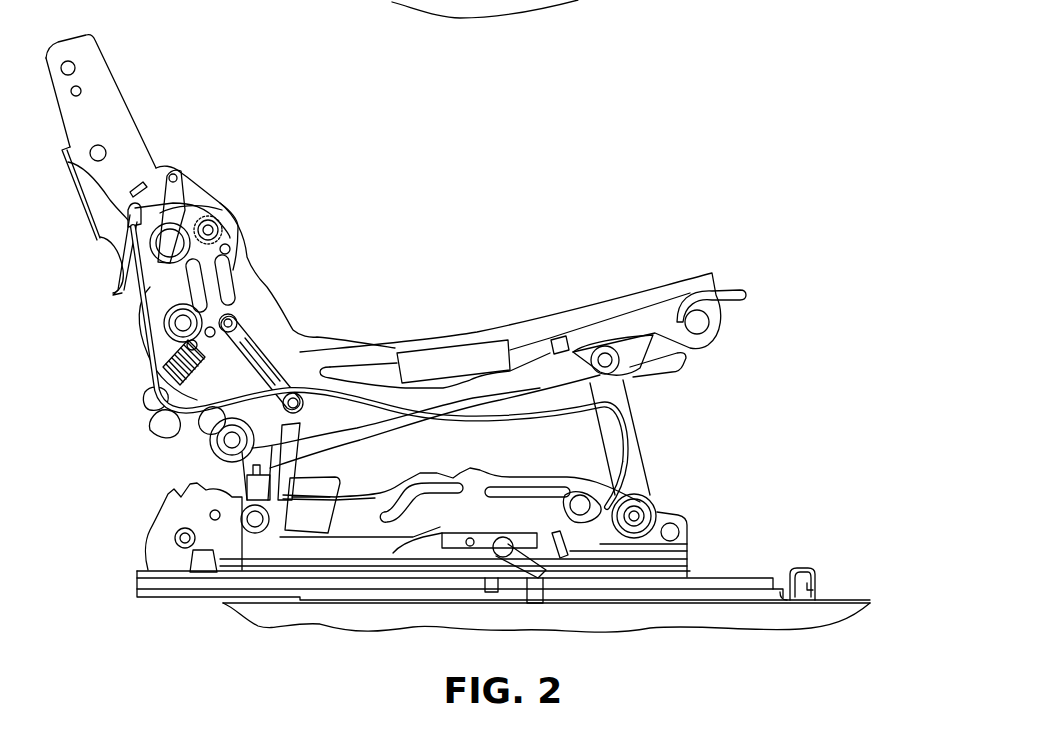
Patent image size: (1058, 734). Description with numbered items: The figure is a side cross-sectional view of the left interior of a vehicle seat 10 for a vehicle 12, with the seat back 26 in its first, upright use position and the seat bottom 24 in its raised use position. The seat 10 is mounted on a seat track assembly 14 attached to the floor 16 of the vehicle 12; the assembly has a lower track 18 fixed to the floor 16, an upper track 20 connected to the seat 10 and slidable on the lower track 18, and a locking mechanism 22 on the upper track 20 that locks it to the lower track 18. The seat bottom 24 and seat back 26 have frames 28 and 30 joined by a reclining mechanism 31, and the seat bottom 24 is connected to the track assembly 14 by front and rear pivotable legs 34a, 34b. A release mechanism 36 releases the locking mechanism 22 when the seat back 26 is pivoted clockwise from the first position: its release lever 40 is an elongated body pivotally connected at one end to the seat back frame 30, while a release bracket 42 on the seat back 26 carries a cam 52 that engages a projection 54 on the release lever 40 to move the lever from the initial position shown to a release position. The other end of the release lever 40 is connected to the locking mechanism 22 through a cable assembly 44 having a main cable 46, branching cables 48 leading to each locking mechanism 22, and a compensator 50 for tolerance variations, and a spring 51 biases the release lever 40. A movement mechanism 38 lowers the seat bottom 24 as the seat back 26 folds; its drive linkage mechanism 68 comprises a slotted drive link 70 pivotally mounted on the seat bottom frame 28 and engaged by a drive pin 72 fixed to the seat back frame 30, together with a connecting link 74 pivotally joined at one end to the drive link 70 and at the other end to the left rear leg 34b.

The vehicle seat 10 is at (355, 168).
The vehicle 12 is at (848, 538).
The seat track assembly 14 is at (737, 539).
The floor 16 is at (838, 603).
The lower track 18 is at (197, 598).
The upper track 20 is at (690, 570).
The locking mechanism 22 is at (532, 518).
The seat bottom 24 is at (604, 248).
The seat back 26 is at (135, 85).
The seat bottom frame 28 is at (690, 278).
The seat back frame 30 is at (119, 66).
The reclining mechanism 31 is at (230, 205).
The front pivotable leg 34a is at (645, 440).
The rear pivotable leg 34b is at (277, 468).
The release mechanism 36 is at (190, 158).
The movement mechanism 38 is at (295, 270).
The release lever 40 is at (68, 162).
The release bracket 42 is at (153, 168).
The cable assembly 44 is at (136, 373).
The main cable 46 is at (117, 270).
The branching cable 48 is at (152, 413).
The compensator 50 is at (124, 308).
The spring 51 is at (240, 262).
The cam 52 is at (128, 220).
The projection 54 is at (212, 185).
The drive linkage mechanism 68 is at (260, 310).
The slotted drive link 70 is at (265, 283).
The drive pin 72 is at (243, 233).
The connecting link 74 is at (345, 343).